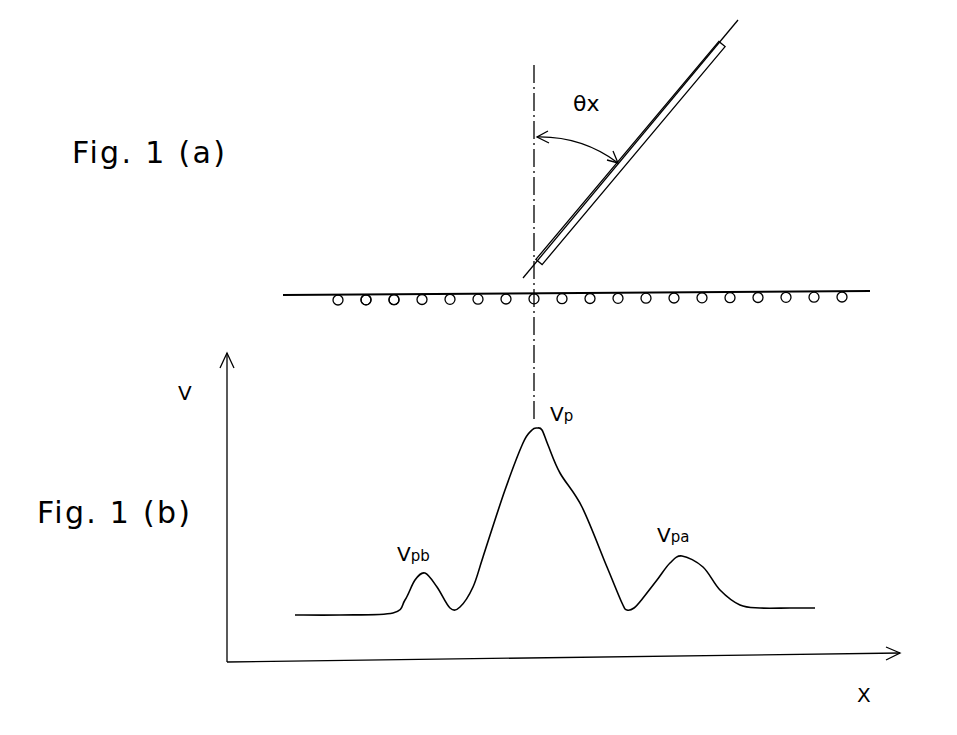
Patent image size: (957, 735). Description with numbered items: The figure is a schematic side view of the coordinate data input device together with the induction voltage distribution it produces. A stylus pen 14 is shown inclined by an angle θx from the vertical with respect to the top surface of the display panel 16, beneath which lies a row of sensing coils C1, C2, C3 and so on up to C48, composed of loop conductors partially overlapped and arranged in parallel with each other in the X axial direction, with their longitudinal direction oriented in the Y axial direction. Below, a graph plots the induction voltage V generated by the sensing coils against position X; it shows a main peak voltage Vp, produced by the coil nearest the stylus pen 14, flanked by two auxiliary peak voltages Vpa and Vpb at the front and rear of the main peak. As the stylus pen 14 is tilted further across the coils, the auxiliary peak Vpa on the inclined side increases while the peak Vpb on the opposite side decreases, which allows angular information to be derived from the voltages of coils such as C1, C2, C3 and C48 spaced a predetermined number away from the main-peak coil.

The stylus pen 14 is at (699, 76).
The display panel 16 is at (770, 293).
The sensing coil C1 is at (338, 306).
The sensing coil C2 is at (366, 306).
The sensing coil C3 is at (394, 306).
The sensing coil C48 is at (842, 303).